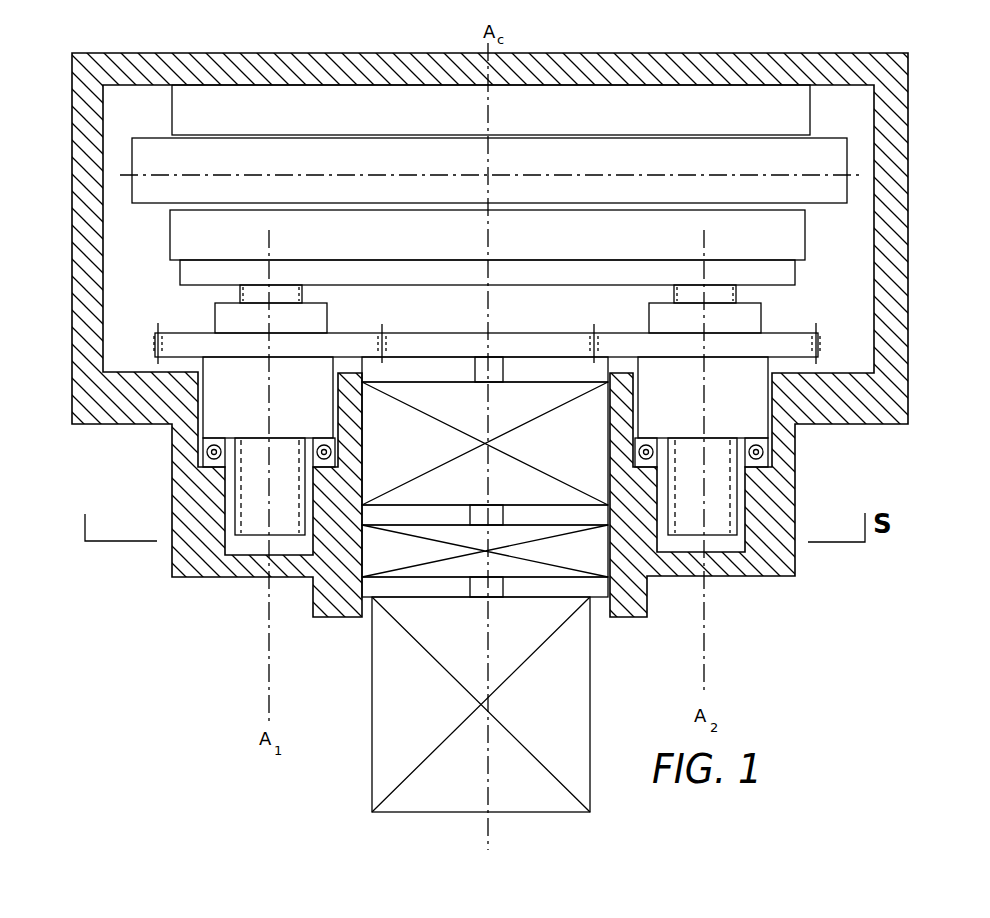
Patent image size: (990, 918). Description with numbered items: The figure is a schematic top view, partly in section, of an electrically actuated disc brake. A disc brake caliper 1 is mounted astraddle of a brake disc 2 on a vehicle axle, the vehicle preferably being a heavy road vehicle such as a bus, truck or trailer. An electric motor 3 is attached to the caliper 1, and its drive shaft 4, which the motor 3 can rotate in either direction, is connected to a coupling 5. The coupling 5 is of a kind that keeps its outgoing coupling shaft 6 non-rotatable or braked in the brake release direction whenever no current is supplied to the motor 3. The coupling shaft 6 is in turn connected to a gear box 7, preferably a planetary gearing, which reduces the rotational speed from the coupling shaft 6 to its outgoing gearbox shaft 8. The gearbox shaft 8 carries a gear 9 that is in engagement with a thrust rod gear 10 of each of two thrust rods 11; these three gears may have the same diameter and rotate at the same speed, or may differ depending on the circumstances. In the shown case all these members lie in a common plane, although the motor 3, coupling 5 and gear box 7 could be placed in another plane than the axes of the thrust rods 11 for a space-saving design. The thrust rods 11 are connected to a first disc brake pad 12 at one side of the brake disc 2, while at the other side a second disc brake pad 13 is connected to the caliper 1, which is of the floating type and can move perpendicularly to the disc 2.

The disc brake caliper 1 is at (885, 392).
The brake disc 2 is at (832, 192).
The electric motor 3 is at (570, 678).
The drive shaft 4 is at (493, 587).
The coupling 5 is at (577, 553).
The coupling shaft 6 is at (433, 485).
The gear box 7 is at (468, 508).
The gearbox shaft 8 is at (472, 372).
The gear 9 is at (450, 340).
The thrust rod gear 10 is at (347, 342).
The thrust rod 11 is at (743, 418).
The first disc brake pad 12 is at (780, 230).
The second disc brake pad 13 is at (797, 112).